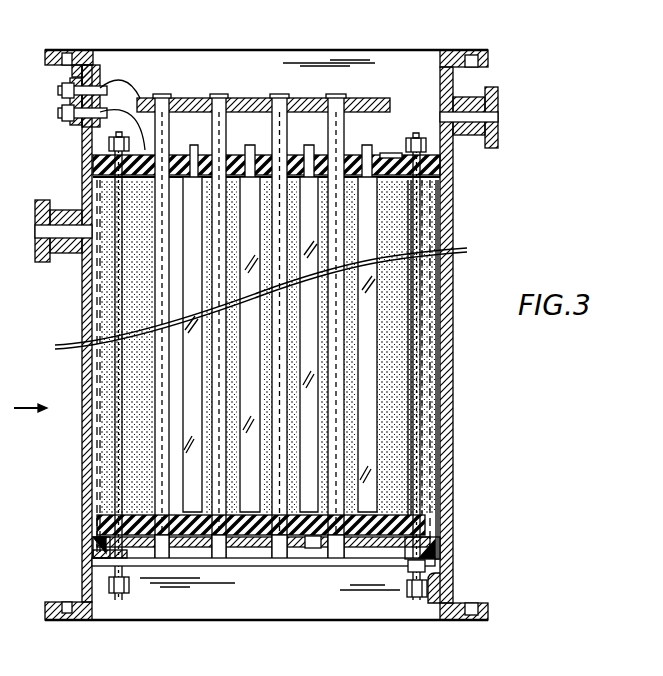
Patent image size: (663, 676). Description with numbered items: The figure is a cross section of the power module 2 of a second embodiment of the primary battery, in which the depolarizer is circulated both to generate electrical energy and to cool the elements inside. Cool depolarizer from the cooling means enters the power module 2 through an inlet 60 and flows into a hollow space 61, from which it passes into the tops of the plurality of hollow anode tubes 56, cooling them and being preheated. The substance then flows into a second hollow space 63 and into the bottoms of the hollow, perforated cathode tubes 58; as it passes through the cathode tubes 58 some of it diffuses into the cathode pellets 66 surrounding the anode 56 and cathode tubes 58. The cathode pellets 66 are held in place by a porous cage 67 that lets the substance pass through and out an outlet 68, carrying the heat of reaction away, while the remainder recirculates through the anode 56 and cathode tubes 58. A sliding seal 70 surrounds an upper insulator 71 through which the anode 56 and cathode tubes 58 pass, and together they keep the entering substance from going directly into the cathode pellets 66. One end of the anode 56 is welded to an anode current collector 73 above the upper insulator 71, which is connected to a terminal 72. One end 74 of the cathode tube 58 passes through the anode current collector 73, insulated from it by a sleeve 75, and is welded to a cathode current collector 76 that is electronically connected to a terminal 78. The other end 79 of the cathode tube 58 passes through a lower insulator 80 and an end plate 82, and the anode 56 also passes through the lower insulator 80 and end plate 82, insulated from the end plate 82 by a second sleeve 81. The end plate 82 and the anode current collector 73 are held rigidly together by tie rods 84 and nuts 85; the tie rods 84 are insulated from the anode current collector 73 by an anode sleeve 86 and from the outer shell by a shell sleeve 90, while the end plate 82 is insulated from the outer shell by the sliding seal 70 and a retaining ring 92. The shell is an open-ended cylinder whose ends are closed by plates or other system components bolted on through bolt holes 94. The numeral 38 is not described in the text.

The power module 2 is at (23, 407).
The housing 38 is at (447, 335).
The anode 56 is at (292, 152).
The cathode tube 58 is at (348, 135).
The inlet 60 is at (498, 110).
The hollow space 61 is at (318, 57).
The second hollow space 63 is at (242, 608).
The cathode pellets 66 is at (432, 413).
The cage 67 is at (435, 205).
The outlet 68 is at (57, 207).
The sliding seal 70 is at (438, 172).
The upper insulator 71 is at (383, 156).
The terminal 72 is at (66, 117).
The anode current collector 73 is at (399, 150).
The end of cathode tube 74 is at (233, 98).
The sleeve 75 is at (230, 153).
The cathode current collector 76 is at (232, 84).
The terminal 78 is at (62, 83).
The end of cathode tube 79 is at (225, 562).
The lower insulator 80 is at (398, 515).
The second sleeve 81 is at (313, 548).
The end plate 82 is at (382, 547).
The tie rods 84 is at (415, 375).
The nuts 85 is at (421, 598).
The anode sleeve 86 is at (428, 152).
The shell sleeve 90 is at (403, 573).
The retaining ring 92 is at (437, 555).
The bolt holes 94 is at (470, 52).